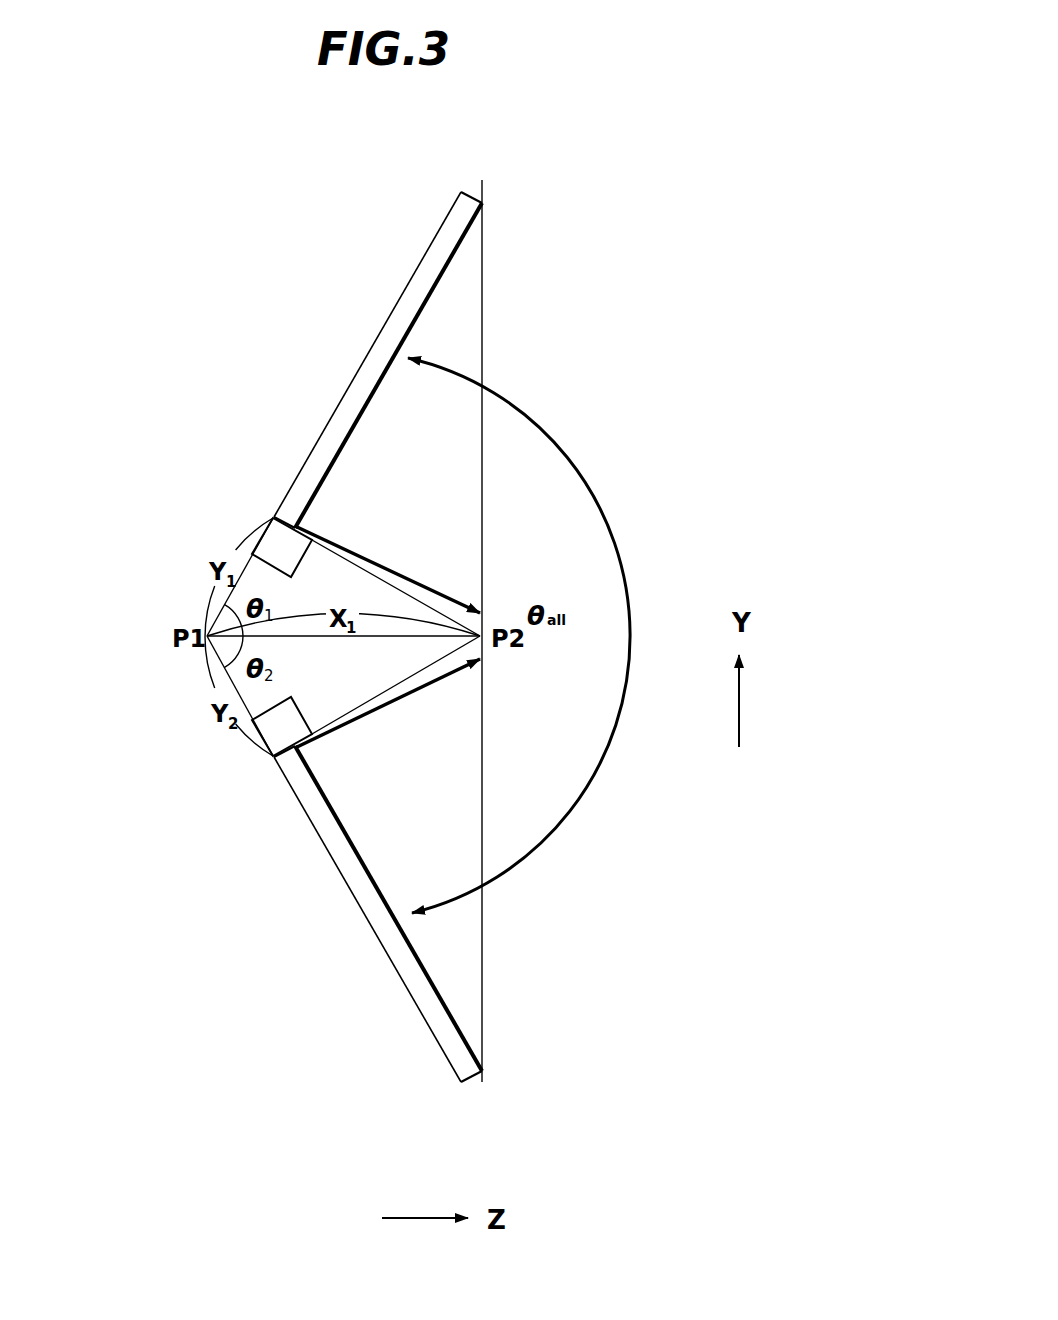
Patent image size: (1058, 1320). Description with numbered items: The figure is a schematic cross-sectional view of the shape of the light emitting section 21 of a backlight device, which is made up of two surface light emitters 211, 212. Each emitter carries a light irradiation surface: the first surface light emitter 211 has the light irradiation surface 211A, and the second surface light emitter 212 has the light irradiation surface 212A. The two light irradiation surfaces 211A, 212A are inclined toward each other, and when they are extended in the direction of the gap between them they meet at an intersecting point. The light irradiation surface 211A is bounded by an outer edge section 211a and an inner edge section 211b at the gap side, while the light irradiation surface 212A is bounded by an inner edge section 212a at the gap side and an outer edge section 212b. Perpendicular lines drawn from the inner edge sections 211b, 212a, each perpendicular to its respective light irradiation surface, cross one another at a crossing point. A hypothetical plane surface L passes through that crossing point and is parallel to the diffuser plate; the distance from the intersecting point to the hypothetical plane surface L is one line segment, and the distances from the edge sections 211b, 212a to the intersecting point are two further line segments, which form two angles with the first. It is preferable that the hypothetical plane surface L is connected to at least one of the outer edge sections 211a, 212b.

The light emitting section 21 is at (414, 646).
The surface light emitter 211 is at (413, 405).
The edge section 211a is at (484, 203).
The light irradiation surface 211A is at (452, 257).
The edge section 211b is at (297, 527).
The surface light emitter 212 is at (414, 859).
The edge section 212a is at (297, 748).
The light irradiation surface 212A is at (370, 871).
The edge section 212b is at (483, 1071).
The hypothetical plane surface L is at (483, 341).